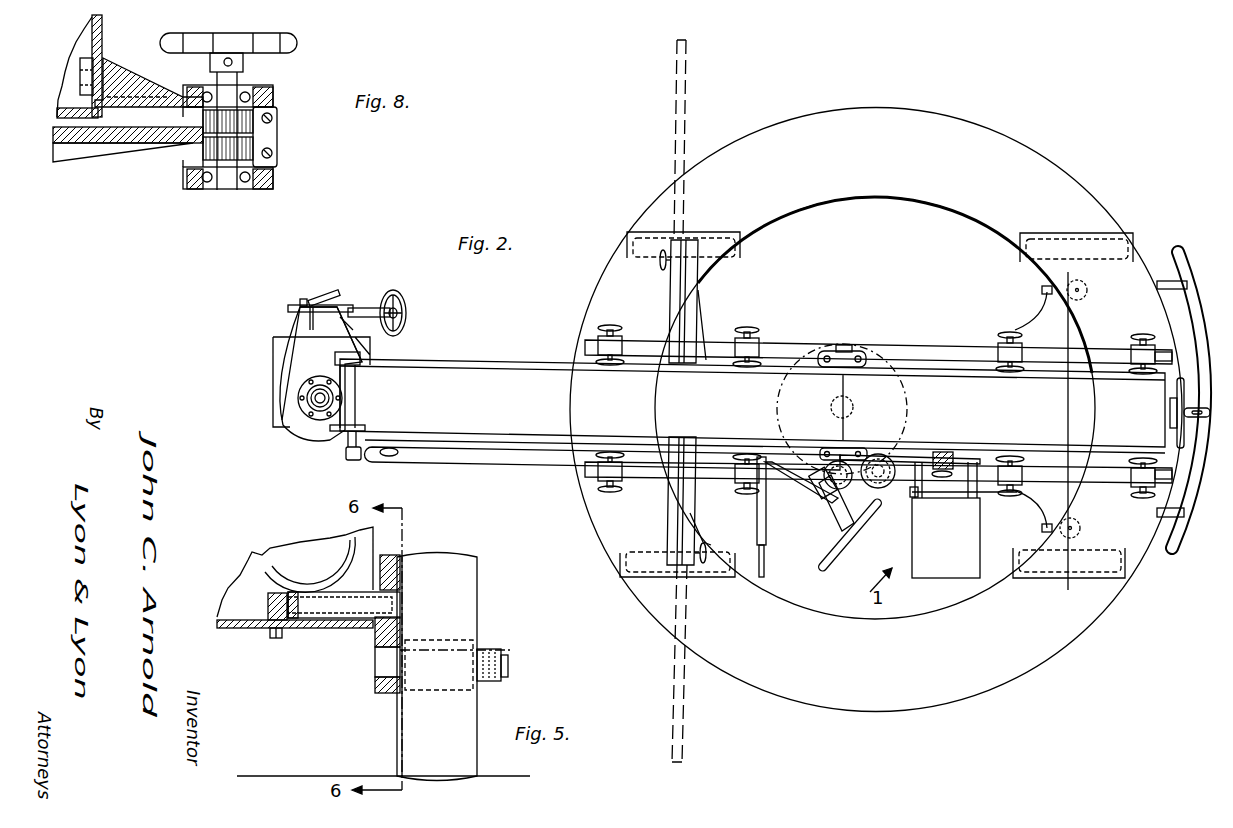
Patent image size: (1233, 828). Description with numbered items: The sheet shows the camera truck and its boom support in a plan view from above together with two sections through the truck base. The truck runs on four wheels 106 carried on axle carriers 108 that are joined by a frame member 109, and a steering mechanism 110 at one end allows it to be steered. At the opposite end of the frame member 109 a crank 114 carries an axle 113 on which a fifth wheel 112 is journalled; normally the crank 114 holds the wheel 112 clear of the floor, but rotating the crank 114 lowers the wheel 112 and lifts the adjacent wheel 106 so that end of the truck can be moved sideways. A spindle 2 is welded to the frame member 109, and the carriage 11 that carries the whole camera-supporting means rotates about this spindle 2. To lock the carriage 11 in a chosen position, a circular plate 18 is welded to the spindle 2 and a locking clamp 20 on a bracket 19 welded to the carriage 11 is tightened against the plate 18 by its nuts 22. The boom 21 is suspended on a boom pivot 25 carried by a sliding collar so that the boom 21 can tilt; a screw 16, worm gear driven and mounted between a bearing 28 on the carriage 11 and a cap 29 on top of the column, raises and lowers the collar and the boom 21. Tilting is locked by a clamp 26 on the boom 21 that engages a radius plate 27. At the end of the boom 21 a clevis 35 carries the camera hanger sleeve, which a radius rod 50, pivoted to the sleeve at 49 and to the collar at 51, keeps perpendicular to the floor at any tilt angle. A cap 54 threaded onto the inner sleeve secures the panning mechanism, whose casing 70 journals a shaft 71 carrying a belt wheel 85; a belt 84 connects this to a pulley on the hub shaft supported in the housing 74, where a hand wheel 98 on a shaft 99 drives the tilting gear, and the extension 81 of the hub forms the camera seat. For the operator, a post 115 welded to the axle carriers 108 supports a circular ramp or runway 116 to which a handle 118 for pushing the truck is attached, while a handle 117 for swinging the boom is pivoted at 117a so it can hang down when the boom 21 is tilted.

In FIG. 2, the spindle 2 is at (850, 401).
In FIG. 8, the carriage 11 is at (103, 22).
In FIG. 2, the screw 16 is at (843, 491).
In FIG. 8, the circular plate 18 is at (133, 140).
In FIG. 2, the circular plate 18 is at (879, 368).
In FIG. 8, the bracket 19 is at (136, 66).
In FIG. 8, the locking clamp 20 is at (238, 90).
In FIG. 2, the boom 21 is at (481, 375).
In FIG. 8, the nuts 22 is at (203, 120).
In FIG. 2, the boom pivot 25 is at (850, 347).
In FIG. 2, the clamp 26 is at (957, 477).
In FIG. 2, the radius plate 27 is at (905, 455).
In FIG. 2, the bearing 28 is at (828, 483).
In FIG. 2, the cap 29 is at (888, 485).
In FIG. 2, the clevis 35 is at (345, 355).
In FIG. 2, the pivotal connection 49 is at (352, 460).
In FIG. 2, the radius rod 50 is at (510, 463).
In FIG. 2, the pivotal connection 51 is at (846, 467).
In FIG. 2, the cap 54 is at (300, 403).
In FIG. 2, the casing 70 is at (290, 385).
In FIG. 2, the shaft 71 is at (318, 302).
In FIG. 2, the housing 74 is at (290, 313).
In FIG. 2, the extension 81 is at (273, 363).
In FIG. 2, the belt 84 is at (303, 299).
In FIG. 2, the belt wheel 85 is at (334, 292).
In FIG. 2, the hand wheel 98 is at (404, 308).
In FIG. 2, the shaft 99 is at (367, 308).
In FIG. 2, the wheels 106 is at (720, 242).
In FIG. 2, the axle carriers 108 is at (1065, 340).
In FIG. 5, the axle carriers 108 is at (263, 572).
In FIG. 5, the frame member 109 is at (240, 630).
In FIG. 2, the steering mechanism 110 is at (828, 521).
In FIG. 5, the fifth wheel 112 is at (466, 558).
In FIG. 5, the axle 113 is at (385, 665).
In FIG. 5, the crank 114 is at (382, 695).
In FIG. 2, the post 115 is at (668, 527).
In FIG. 2, the ramp or runway 116 is at (888, 711).
In FIG. 2, the handle 117 is at (651, 340).
In FIG. 2, the pivot 117a is at (1140, 330).
In FIG. 2, the handle 118 is at (1198, 252).